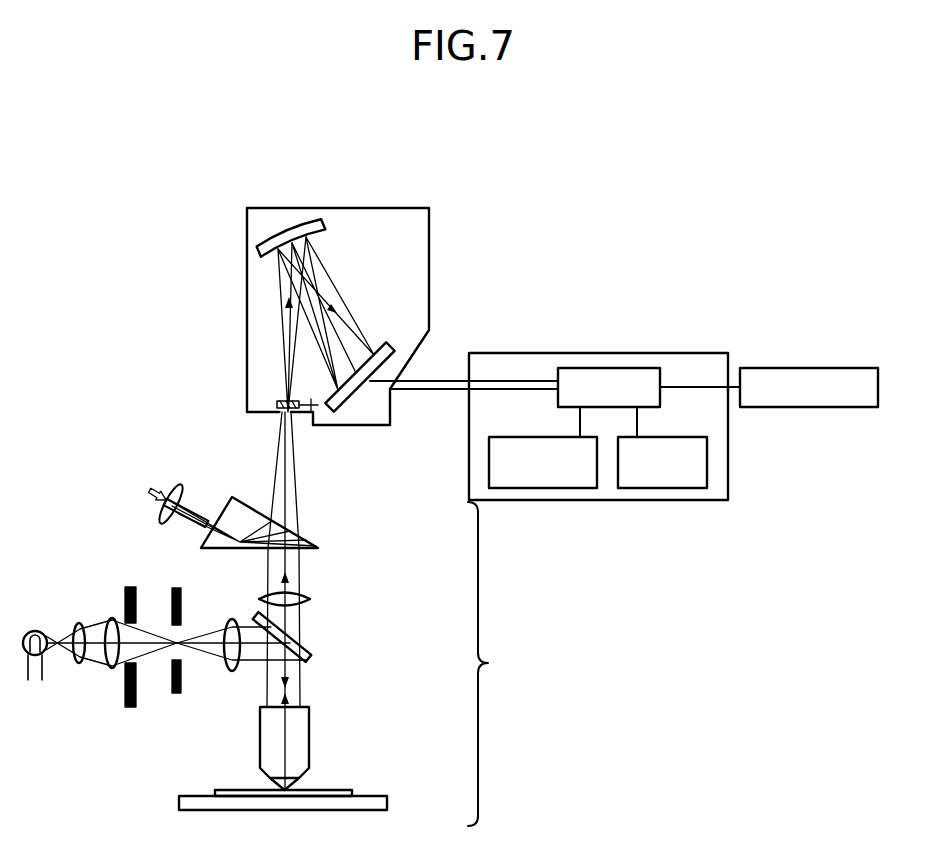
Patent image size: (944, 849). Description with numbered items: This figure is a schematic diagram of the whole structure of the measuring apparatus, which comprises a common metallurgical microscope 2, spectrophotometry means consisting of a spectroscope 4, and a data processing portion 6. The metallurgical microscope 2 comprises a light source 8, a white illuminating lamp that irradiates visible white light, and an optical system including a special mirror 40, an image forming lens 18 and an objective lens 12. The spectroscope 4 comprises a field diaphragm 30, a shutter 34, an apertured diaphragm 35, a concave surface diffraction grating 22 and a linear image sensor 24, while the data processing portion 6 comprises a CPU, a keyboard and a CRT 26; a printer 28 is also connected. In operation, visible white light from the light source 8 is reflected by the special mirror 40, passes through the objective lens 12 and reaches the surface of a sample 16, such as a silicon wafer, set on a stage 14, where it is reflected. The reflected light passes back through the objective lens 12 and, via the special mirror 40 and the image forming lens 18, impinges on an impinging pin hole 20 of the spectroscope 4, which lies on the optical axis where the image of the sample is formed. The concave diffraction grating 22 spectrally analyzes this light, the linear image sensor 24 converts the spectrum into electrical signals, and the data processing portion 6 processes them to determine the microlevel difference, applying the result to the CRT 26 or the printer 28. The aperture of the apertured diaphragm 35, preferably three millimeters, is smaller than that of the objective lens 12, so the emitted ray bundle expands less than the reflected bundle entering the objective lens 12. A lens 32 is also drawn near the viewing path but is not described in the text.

The metallurgical microscope 2 is at (488, 664).
The spectroscope 4 is at (239, 242).
The data processing portion 6 is at (594, 346).
The light source 8 is at (34, 631).
The objective lens 12 is at (259, 754).
The stage 14 is at (388, 803).
The sample 16 is at (320, 784).
The image forming lens 18 is at (310, 598).
The impinging pin hole 20 is at (289, 419).
The concave surface diffraction grating 22 is at (324, 219).
The linear image sensor (CCD) 24 is at (386, 364).
The CRT 26 is at (684, 437).
The printer 28 is at (775, 368).
The field diaphragm 30 is at (182, 597).
The eyepiece lens 32 is at (180, 484).
The shutter 34 is at (282, 401).
The apertured diaphragm 35 is at (136, 586).
The special mirror 40 is at (311, 648).